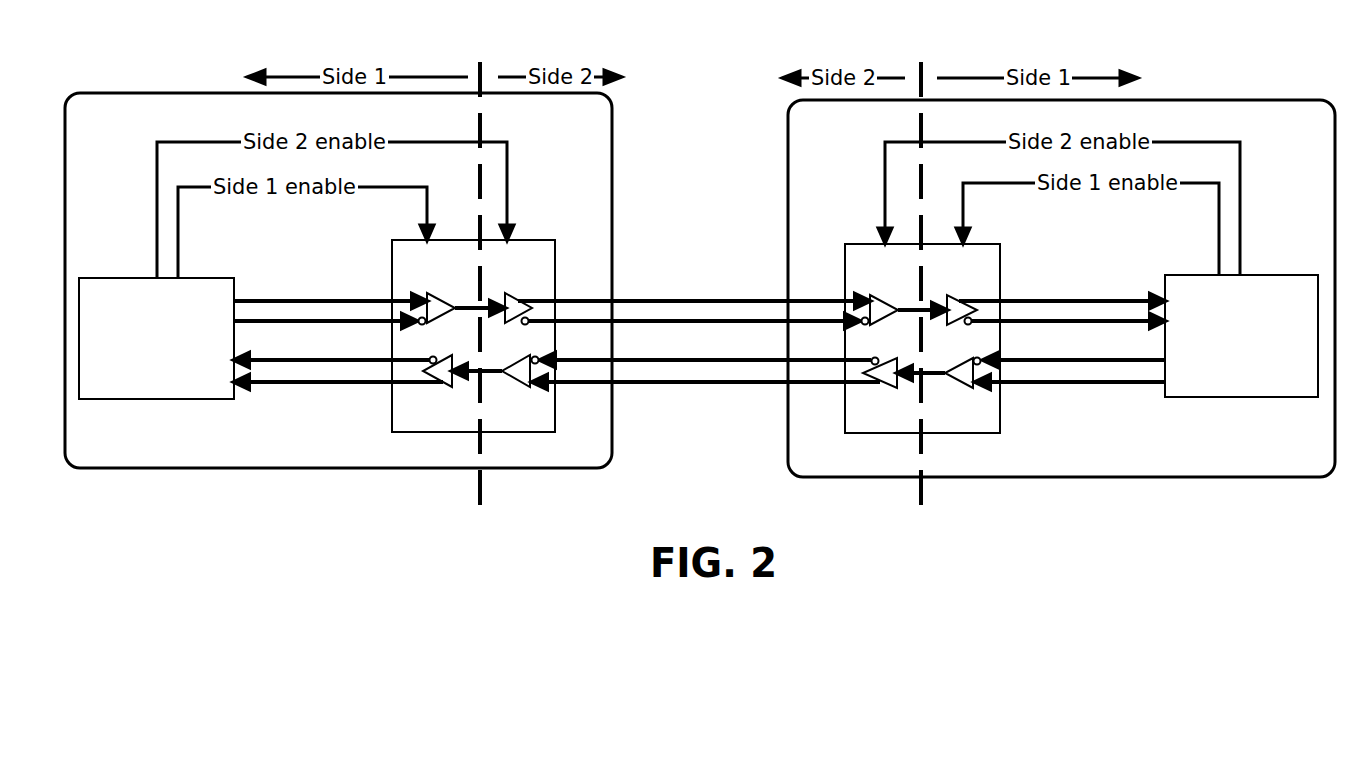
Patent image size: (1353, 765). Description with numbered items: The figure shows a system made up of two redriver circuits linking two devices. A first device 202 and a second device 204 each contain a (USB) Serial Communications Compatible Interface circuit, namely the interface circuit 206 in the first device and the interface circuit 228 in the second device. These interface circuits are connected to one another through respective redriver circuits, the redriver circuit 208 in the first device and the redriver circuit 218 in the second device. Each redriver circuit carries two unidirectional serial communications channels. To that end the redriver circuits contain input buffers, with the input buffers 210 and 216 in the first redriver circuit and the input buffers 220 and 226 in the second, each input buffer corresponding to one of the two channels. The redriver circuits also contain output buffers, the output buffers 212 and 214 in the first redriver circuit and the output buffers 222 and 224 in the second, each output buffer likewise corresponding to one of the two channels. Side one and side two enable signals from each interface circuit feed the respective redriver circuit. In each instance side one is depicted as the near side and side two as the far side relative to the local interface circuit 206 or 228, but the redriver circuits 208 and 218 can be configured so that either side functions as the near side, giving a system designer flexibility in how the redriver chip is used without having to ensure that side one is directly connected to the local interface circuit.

The device 202 is at (613, 163).
The device 204 is at (1192, 99).
The (USB) Serial Communications Compatible Interface circuit 206 is at (207, 288).
The redriver circuit 208 is at (542, 240).
The input buffer 210 is at (433, 293).
The output buffer 212 is at (508, 292).
The output buffer 214 is at (437, 354).
The input buffer 216 is at (513, 358).
The redriver circuit 218 is at (1000, 268).
The input buffer 220 is at (870, 294).
The output buffer 222 is at (946, 294).
The output buffer 224 is at (877, 358).
The input buffer 226 is at (947, 360).
The (USB) Serial Communications Compatible Interface circuit 228 is at (1263, 273).